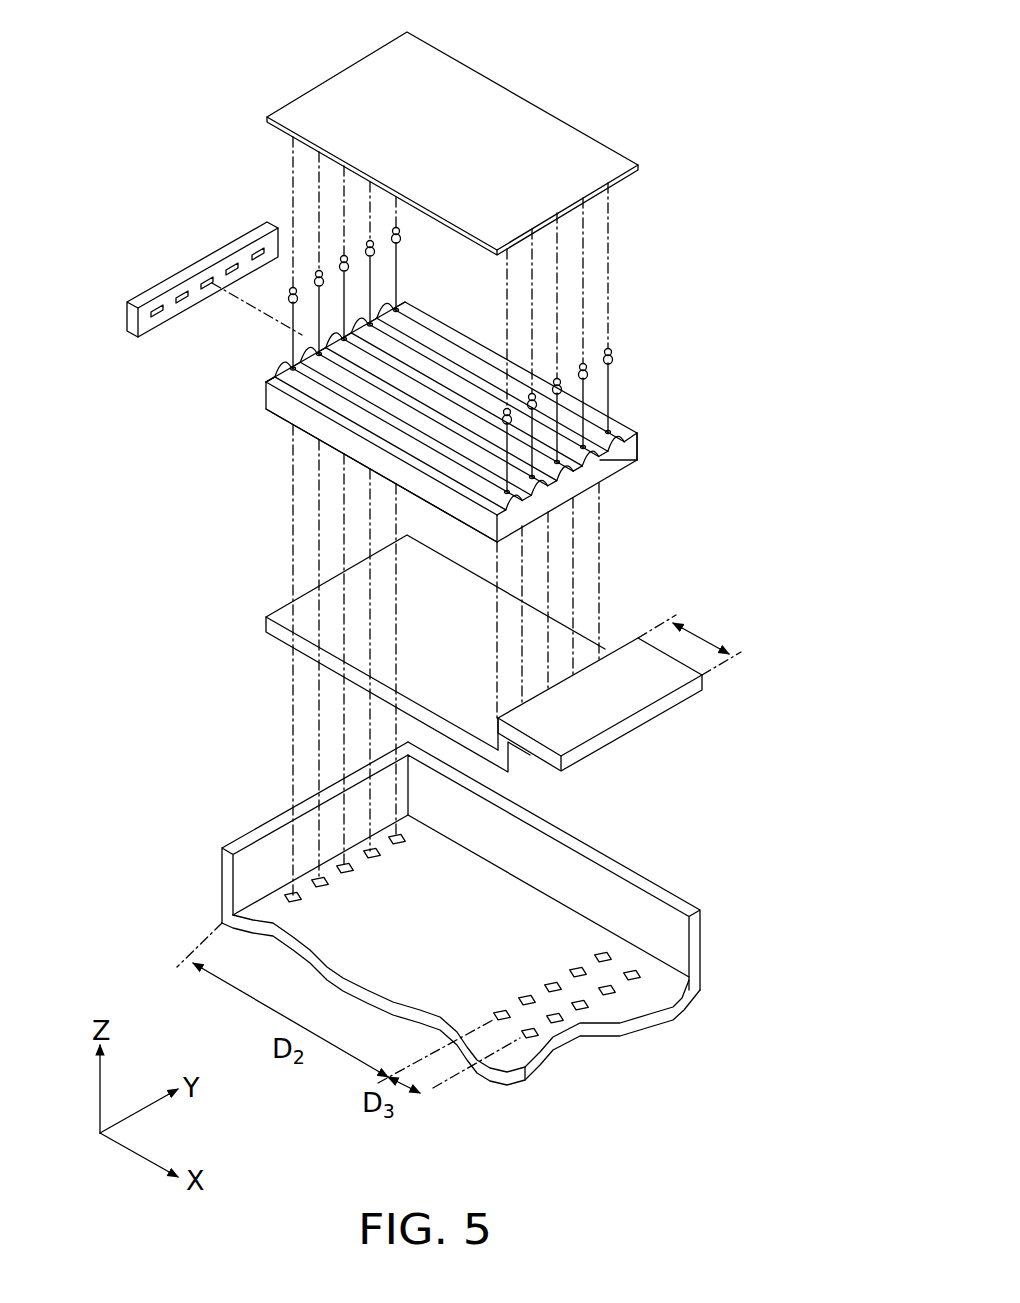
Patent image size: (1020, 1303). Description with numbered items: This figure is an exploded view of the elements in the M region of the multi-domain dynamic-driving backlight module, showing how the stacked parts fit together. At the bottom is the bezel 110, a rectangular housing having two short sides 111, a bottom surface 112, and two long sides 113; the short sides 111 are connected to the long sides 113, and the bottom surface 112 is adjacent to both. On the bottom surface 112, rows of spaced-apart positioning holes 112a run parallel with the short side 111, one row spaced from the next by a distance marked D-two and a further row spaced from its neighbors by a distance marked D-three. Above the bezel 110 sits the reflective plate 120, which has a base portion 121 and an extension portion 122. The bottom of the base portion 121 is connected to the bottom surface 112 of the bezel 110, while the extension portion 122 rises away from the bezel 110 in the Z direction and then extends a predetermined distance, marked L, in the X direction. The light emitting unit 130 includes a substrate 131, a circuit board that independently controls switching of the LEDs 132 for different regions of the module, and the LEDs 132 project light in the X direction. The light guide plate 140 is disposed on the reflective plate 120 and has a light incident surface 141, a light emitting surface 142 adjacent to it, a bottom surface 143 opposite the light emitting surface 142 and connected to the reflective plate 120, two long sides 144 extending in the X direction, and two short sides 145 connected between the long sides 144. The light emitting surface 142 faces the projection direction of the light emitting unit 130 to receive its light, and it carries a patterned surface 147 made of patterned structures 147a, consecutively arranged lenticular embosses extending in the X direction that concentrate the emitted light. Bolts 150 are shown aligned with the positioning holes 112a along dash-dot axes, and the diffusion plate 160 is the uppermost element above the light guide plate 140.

The M region M is at (690, 27).
The bezel 110 is at (441, 905).
The short side 111 is at (243, 843).
The bottom surface 112 is at (517, 910).
The positioning holes 112a is at (293, 898).
The long side 113 is at (653, 888).
The reflective plate 120 is at (477, 653).
The base portion 121 is at (290, 606).
The extension portion 122 is at (702, 682).
The light emitting unit 130 is at (186, 236).
The substrate 131 is at (212, 257).
The LEDs 132 is at (260, 250).
The light guide plate 140 is at (445, 391).
The light incident surface 141 is at (266, 378).
The light emitting surface 142 is at (441, 326).
The bottom surface 143 is at (318, 432).
The long sides 144 is at (292, 452).
The short sides 145 is at (603, 478).
The patterned surface 147 is at (636, 422).
The patterned structures 147a is at (612, 472).
The bolts 150 is at (616, 348).
The diffusion plate 160 is at (345, 82).